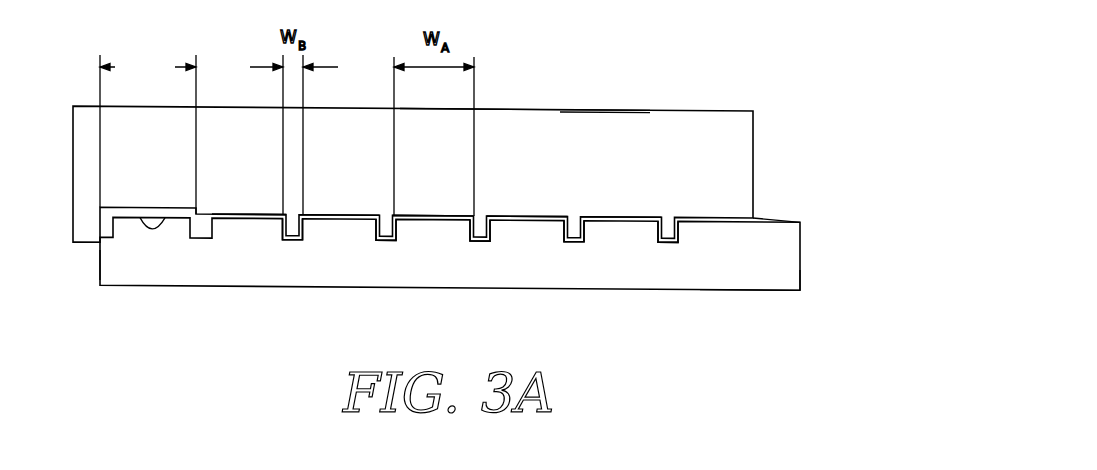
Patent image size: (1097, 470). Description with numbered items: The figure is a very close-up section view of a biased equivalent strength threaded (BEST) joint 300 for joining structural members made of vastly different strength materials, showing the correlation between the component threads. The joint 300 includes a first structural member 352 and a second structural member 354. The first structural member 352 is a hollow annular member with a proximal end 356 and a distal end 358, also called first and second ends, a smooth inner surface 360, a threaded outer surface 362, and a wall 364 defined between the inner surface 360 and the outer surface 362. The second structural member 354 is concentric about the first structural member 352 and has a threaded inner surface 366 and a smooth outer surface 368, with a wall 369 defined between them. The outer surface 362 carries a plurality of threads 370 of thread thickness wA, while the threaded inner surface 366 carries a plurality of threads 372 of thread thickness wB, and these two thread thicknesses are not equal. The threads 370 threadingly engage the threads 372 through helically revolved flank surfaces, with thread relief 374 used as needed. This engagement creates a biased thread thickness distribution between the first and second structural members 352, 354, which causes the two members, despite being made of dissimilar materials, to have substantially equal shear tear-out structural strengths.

The biased equivalent strength threaded (BEST) joint 300 is at (700, 63).
The first structural member 352 is at (802, 247).
The second structural member 354 is at (762, 130).
The proximal end 356 is at (80, 292).
The distal end 358 is at (820, 295).
The inner surface 360 is at (783, 291).
The threaded outer surface 362 is at (782, 220).
The wall 364 is at (155, 265).
The threaded inner surface 366 is at (140, 214).
The smooth outer surface 368 is at (535, 108).
The wall 369 is at (605, 122).
The threads 370 is at (245, 227).
The threads 372 is at (298, 230).
The thread relief 374 is at (148, 134).